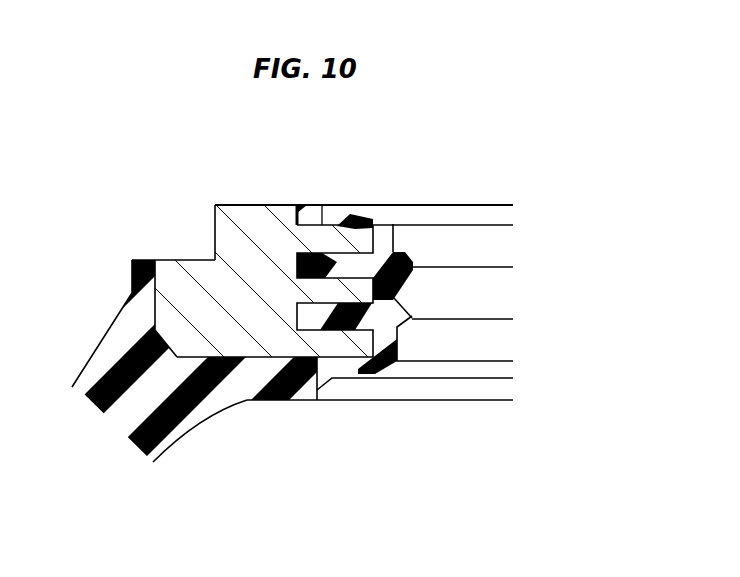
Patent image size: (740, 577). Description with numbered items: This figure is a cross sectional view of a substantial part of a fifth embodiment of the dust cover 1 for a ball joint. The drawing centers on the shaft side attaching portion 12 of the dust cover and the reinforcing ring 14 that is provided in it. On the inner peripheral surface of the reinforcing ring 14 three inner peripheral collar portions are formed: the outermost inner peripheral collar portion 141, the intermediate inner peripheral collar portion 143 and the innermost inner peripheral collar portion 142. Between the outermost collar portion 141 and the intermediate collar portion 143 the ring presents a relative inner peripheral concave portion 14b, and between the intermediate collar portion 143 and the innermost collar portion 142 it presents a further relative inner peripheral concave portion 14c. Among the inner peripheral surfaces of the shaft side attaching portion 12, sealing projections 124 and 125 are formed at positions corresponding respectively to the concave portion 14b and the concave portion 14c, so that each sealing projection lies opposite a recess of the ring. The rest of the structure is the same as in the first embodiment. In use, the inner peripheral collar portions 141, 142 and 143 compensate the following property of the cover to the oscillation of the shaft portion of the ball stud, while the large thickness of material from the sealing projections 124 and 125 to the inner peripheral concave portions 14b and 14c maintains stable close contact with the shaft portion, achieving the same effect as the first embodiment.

The dust cover 1 is at (80, 326).
The shaft side attaching portion 12 is at (283, 417).
The reinforcing ring 14 is at (230, 236).
The inner peripheral concave portion 14b is at (310, 223).
The inner peripheral concave portion 14c is at (318, 398).
The sealing projection 124 is at (418, 260).
The sealing projection 125 is at (413, 319).
The outermost inner peripheral collar portion 141 is at (368, 226).
The innermost inner peripheral collar portion 142 is at (345, 347).
The intermediate inner peripheral collar portion 143 is at (395, 252).